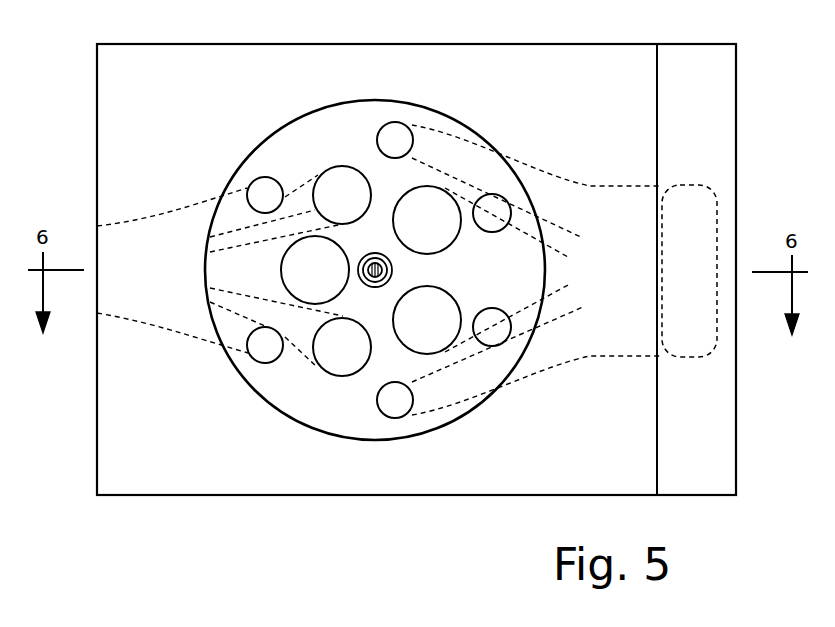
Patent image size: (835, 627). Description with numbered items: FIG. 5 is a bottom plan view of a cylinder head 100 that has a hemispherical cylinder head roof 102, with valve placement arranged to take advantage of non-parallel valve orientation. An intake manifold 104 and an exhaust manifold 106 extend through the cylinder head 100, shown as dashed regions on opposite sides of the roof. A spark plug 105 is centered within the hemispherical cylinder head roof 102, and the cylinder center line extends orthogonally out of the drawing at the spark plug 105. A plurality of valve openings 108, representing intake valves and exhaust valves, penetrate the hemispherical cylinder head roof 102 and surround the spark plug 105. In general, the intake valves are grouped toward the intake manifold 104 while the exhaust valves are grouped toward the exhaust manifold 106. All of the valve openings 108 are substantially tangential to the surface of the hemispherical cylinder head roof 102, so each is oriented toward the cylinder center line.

The cylinder head 100 is at (105, 522).
The hemispherical cylinder head roof 102 is at (300, 425).
The intake manifold 104 is at (695, 185).
The spark plug 105 is at (372, 253).
The exhaust manifold 106 is at (115, 226).
The valve openings 108 is at (332, 166).